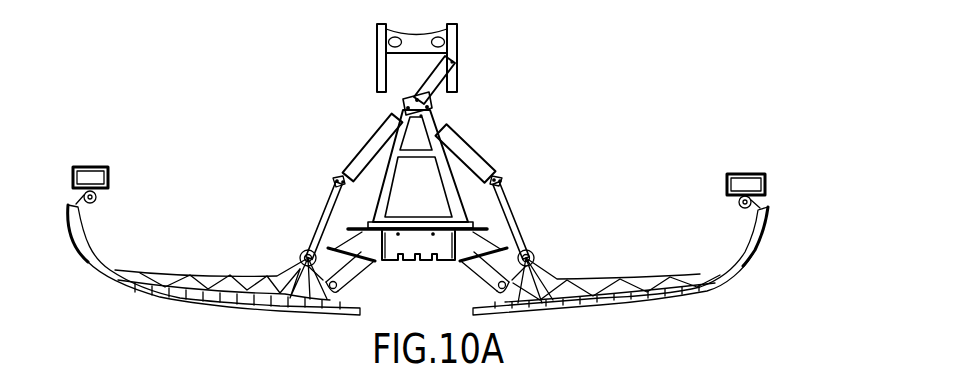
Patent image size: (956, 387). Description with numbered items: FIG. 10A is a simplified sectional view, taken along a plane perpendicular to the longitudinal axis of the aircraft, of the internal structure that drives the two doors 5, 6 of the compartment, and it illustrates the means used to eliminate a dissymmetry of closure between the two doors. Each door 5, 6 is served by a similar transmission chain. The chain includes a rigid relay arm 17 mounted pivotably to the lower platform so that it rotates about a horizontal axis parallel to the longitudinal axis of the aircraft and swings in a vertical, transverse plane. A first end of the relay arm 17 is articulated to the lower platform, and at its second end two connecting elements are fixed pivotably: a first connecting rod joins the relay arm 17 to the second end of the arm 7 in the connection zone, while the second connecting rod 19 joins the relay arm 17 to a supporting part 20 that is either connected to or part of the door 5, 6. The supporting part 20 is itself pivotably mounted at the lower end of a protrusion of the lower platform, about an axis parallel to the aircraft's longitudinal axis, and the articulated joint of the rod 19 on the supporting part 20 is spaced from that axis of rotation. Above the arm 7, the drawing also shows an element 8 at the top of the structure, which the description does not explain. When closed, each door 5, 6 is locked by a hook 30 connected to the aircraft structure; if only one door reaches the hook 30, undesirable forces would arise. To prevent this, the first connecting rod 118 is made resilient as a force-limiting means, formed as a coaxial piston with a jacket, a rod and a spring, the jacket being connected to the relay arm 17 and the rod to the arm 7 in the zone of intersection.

The door 5 is at (225, 308).
The door 6 is at (618, 307).
The arm 7 is at (384, 173).
The connecting arm 8 is at (441, 98).
The relay arm 17 is at (501, 184).
The second connecting element (rod) 19 is at (516, 215).
The supporting part 20 is at (540, 277).
The hook 30 is at (740, 205).
The first resilient connecting rod 118 is at (460, 148).